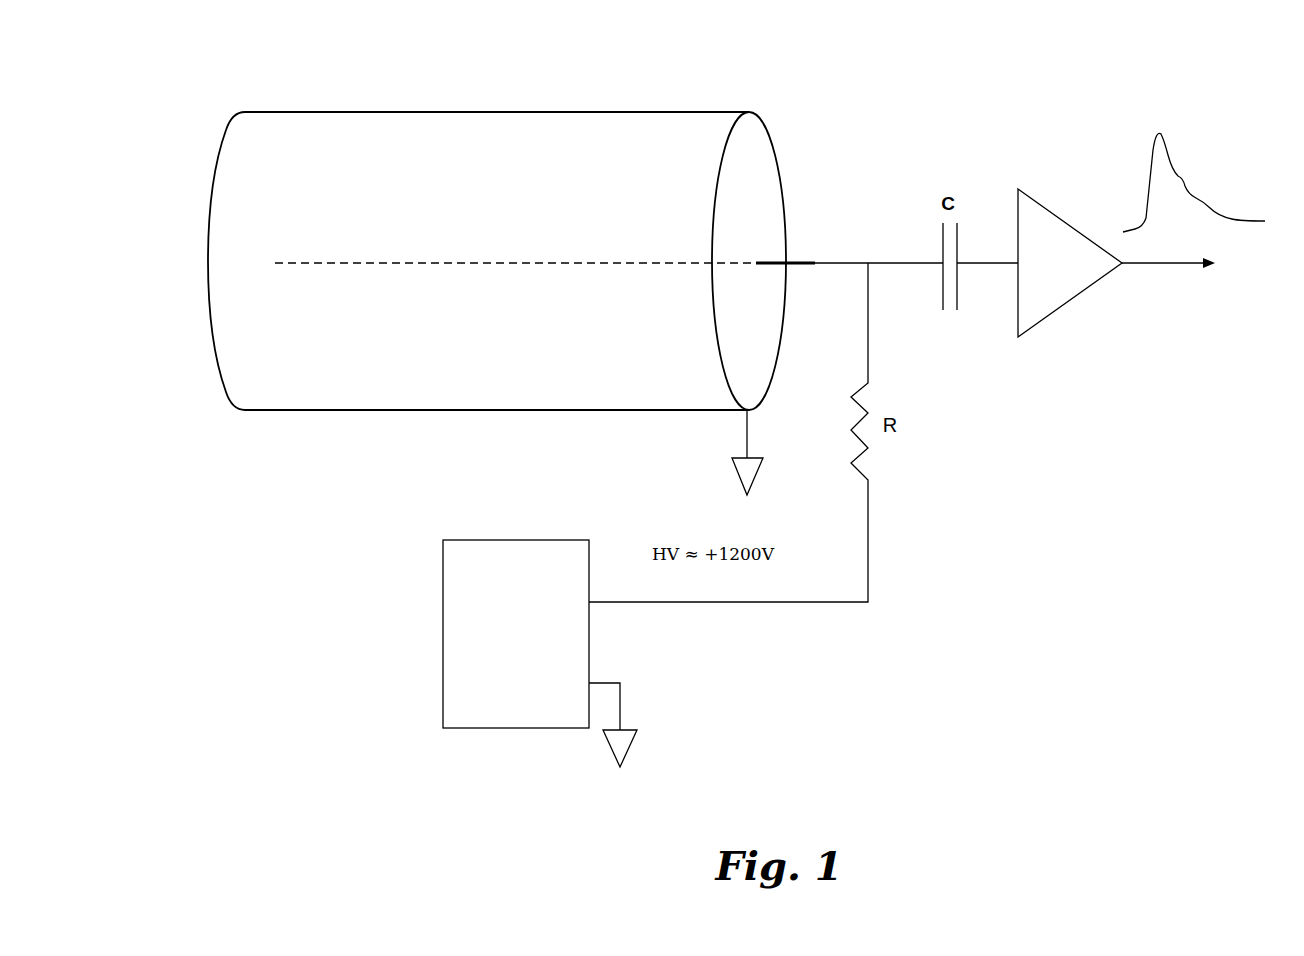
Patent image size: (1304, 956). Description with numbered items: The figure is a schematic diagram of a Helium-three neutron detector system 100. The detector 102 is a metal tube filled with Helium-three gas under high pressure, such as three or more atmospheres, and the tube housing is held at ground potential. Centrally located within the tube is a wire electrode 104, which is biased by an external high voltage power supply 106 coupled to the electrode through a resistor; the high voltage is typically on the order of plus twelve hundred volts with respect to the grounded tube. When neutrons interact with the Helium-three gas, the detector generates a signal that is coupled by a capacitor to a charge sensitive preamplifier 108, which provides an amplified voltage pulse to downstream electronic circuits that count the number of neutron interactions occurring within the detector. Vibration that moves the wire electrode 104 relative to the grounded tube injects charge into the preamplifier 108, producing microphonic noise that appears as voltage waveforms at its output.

The neutron detection system 100 is at (788, 57).
The neutron detector (3He tube) 102 is at (568, 111).
The anode wire 104 is at (535, 265).
The high voltage power supply 106 is at (518, 539).
The preamplifier 108 is at (1064, 220).